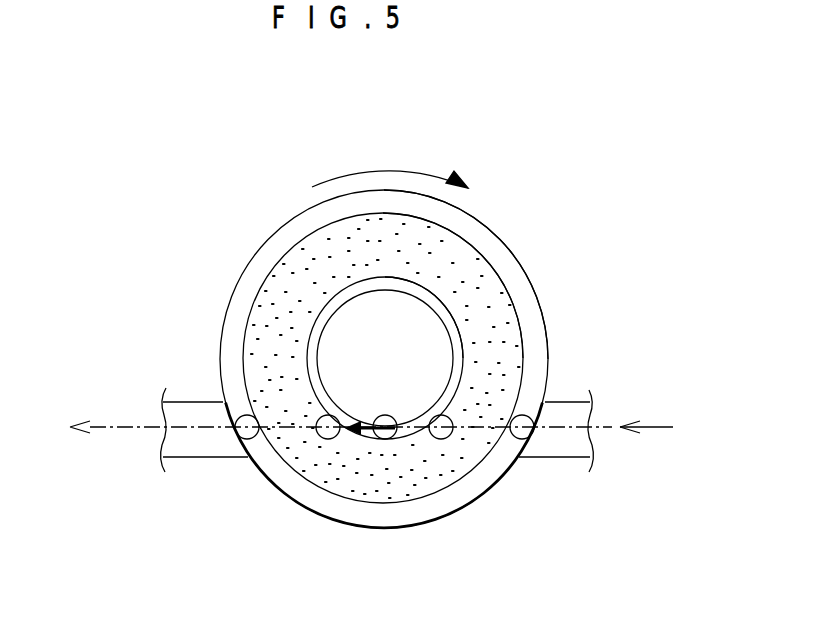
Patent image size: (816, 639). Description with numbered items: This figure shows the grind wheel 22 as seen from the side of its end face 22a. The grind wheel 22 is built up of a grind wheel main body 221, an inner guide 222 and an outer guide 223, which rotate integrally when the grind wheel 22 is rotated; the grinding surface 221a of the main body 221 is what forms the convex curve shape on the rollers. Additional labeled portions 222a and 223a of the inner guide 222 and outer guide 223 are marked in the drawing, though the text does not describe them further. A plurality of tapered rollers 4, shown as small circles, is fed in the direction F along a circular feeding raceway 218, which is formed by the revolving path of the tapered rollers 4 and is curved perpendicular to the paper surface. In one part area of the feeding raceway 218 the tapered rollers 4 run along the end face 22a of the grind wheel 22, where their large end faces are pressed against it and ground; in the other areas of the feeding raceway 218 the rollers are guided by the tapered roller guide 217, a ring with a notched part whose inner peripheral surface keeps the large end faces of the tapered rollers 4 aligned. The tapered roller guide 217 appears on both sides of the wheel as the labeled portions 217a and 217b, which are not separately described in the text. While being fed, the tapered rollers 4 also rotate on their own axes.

The grind wheel 22 is at (161, 147).
The grind wheel main body 221 is at (290, 258).
The inner guide 222 is at (345, 295).
The outer guide 223 is at (255, 268).
The end face 22a is at (630, 143).
The grinding surface 221a is at (475, 268).
The inner layer surface 222a is at (460, 333).
The outer layer surface 223a is at (473, 227).
The tapered roller guide 217 is at (381, 398).
The shaft portion 217a is at (572, 400).
The shaft portion 217b is at (193, 402).
The feeding raceway 218 is at (490, 445).
The tapered rollers 4 is at (536, 380).
The feeding direction F is at (372, 420).